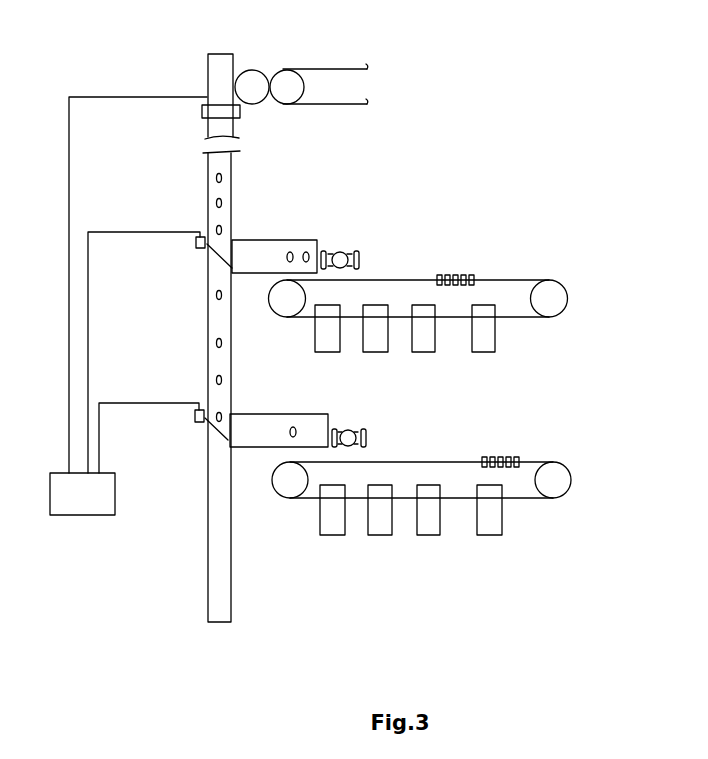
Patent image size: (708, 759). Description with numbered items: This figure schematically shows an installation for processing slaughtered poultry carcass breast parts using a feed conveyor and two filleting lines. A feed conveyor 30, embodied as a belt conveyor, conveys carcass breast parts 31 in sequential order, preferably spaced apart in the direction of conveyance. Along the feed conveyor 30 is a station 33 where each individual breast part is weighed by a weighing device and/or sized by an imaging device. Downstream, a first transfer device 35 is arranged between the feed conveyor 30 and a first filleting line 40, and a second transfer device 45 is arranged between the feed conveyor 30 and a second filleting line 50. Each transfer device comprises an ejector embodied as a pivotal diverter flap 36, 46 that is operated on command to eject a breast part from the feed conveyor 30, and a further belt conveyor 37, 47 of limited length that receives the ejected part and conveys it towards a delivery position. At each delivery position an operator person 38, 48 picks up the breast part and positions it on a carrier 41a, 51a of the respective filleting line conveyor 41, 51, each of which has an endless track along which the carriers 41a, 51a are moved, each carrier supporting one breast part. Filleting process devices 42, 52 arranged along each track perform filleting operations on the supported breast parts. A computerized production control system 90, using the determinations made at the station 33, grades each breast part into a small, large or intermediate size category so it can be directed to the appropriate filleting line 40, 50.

The feed conveyor 30 is at (223, 82).
The carcass breast parts 31 is at (228, 203).
The station 33 is at (190, 114).
The first transfer device 35 is at (195, 273).
The pivotal diverter flap 36 is at (210, 255).
The further belt conveyor 37 is at (258, 246).
The operator person 38 is at (355, 240).
The first filleting line 40 is at (436, 262).
The filleting line conveyor 41 is at (400, 278).
The carriers 41a is at (458, 268).
The filleting process devices 42 is at (332, 357).
The second transfer device 45 is at (198, 448).
The pivotal diverter flap 46 is at (208, 432).
The further belt conveyor 47 is at (262, 428).
The operator person 48 is at (372, 432).
The second filleting line 50 is at (461, 449).
The filleting line conveyor 51 is at (420, 458).
The carriers 51a is at (495, 453).
The filleting process devices 52 is at (333, 538).
The computerized production control system 90 is at (48, 500).